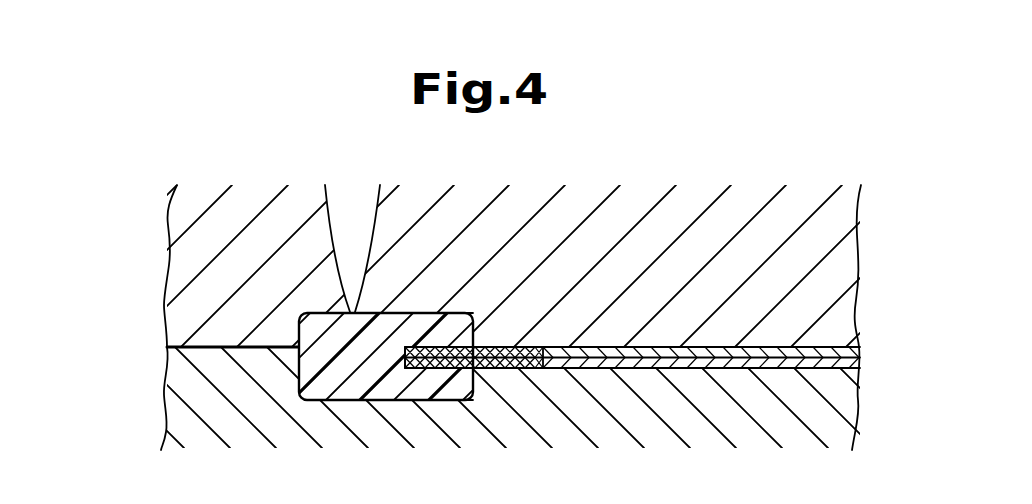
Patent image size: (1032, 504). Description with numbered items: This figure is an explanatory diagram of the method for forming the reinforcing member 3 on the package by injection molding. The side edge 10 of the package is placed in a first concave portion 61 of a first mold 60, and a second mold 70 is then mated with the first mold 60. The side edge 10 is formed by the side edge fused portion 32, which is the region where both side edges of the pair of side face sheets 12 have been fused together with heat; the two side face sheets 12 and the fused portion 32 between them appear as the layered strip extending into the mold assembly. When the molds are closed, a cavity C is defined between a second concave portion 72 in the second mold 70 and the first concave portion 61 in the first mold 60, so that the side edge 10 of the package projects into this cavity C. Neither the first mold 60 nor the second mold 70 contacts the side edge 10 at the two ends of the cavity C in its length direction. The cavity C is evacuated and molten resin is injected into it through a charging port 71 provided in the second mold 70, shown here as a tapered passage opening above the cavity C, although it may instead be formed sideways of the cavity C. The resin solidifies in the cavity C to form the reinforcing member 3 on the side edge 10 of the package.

The second mold 70 is at (150, 302).
The first mold 60 is at (152, 414).
The cavity C is at (312, 333).
The charging port 71 is at (382, 200).
The reinforcing member 3 is at (297, 389).
The second concave portion 72 is at (472, 312).
The side edge fused portion 32 is at (498, 347).
The side face sheet 12 is at (836, 342).
The side edge 10 is at (405, 368).
The first concave portion 61 is at (447, 392).